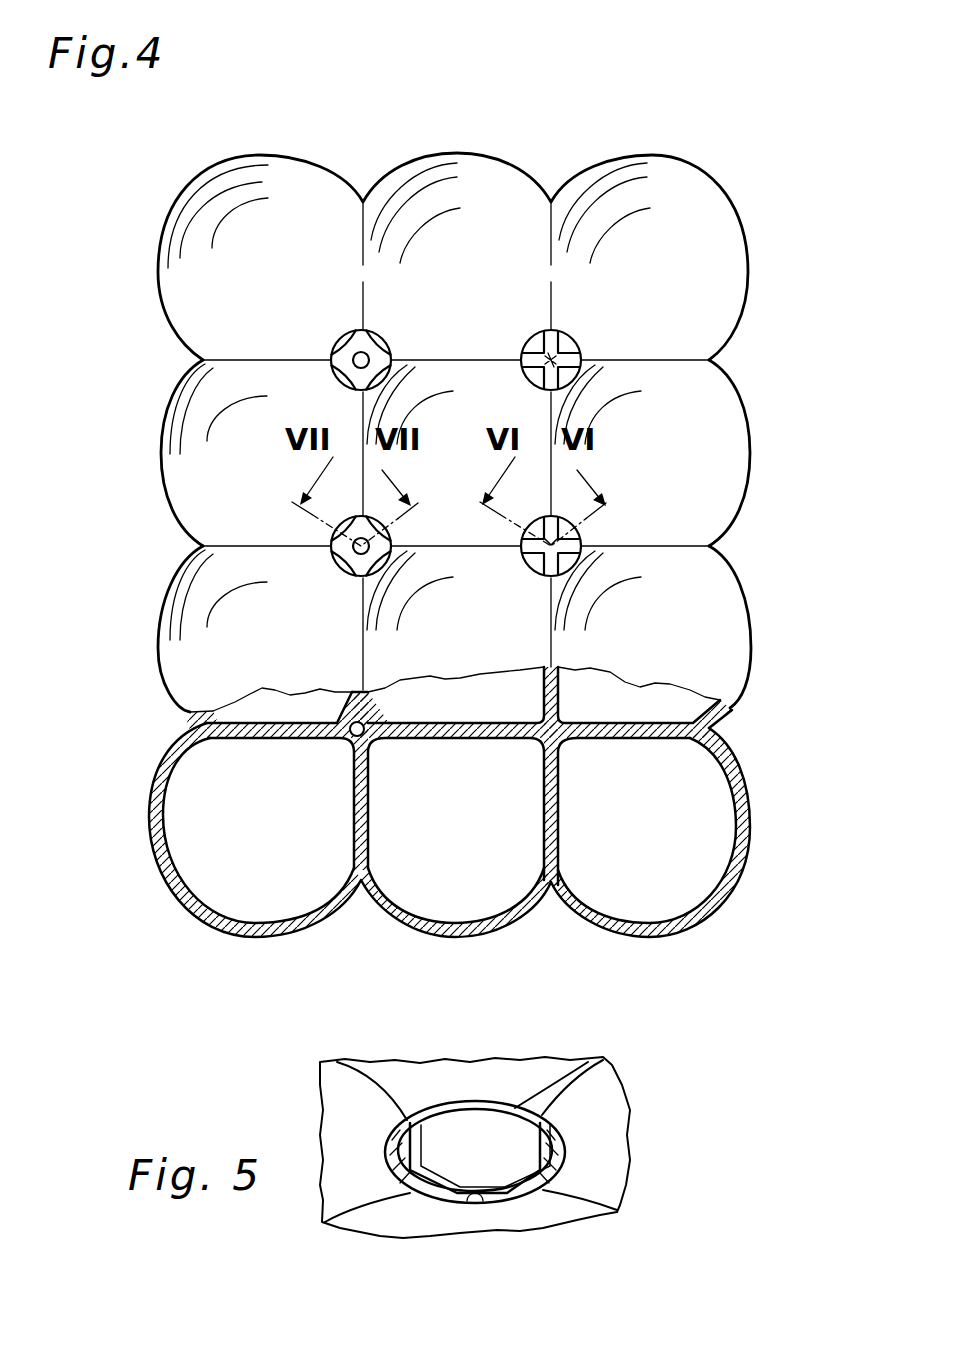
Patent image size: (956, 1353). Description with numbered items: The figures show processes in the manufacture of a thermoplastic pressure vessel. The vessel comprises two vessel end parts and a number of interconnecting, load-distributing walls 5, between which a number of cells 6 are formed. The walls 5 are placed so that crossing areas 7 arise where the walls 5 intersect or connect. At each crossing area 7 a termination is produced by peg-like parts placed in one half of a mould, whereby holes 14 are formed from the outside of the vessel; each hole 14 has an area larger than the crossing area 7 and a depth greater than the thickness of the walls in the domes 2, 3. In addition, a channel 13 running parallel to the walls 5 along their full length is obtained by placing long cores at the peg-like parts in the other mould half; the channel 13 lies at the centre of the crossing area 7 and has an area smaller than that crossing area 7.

In FIG. 4, the dome 2 is at (454, 378).
In FIG. 4, the dome 3 is at (468, 245).
In FIG. 4, the wall 5 is at (550, 705).
In FIG. 4, the cell 6 is at (430, 862).
In FIG. 4, the crossing area 7 is at (575, 332).
In FIG. 4, the channel 13 is at (348, 736).
In FIG. 4, the hole 14 is at (565, 560).
In FIG. 5, the hole 14 is at (483, 1153).